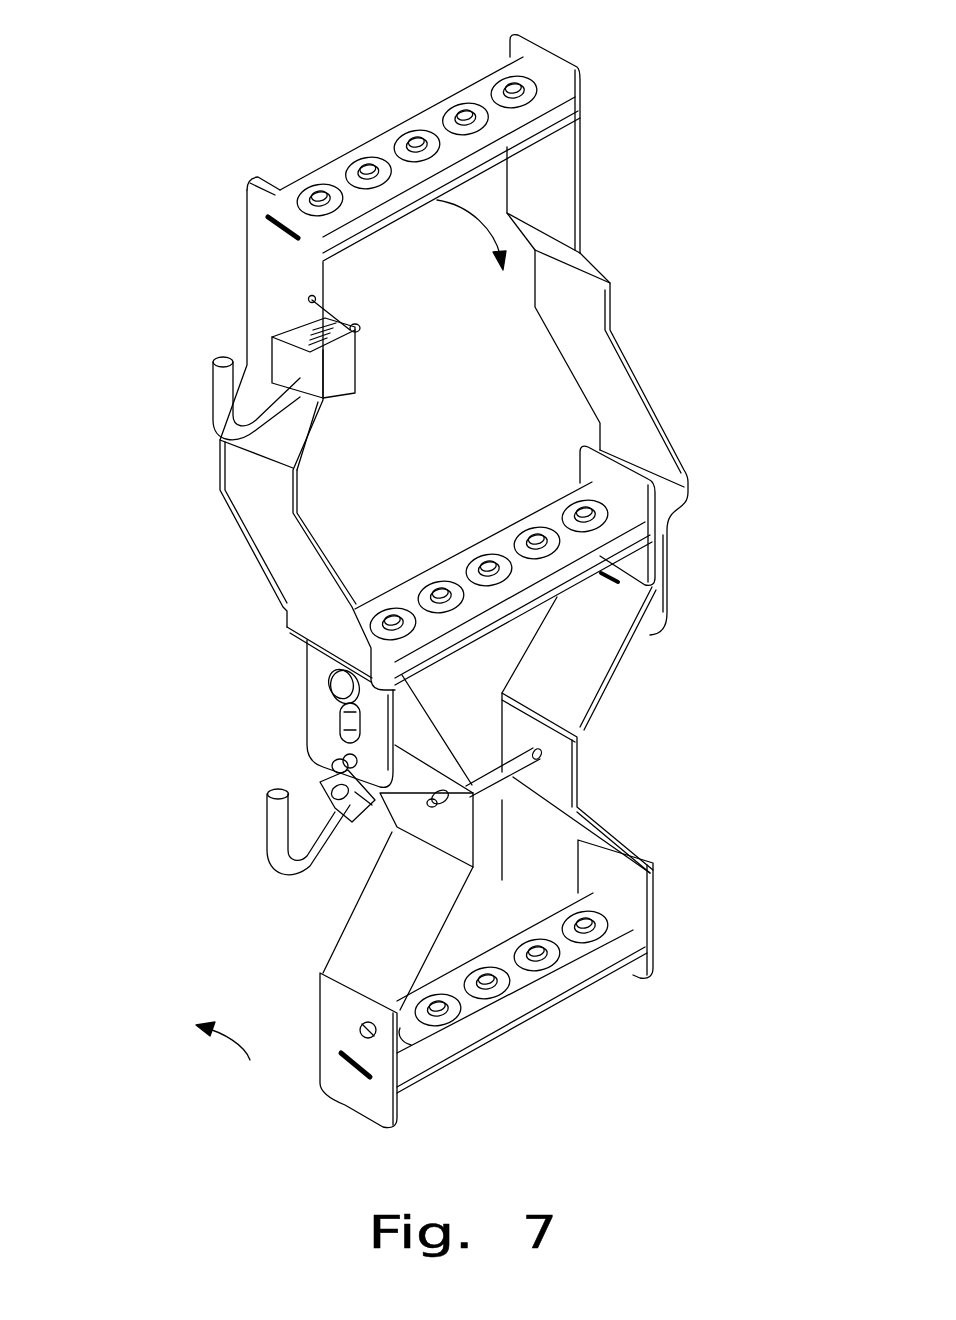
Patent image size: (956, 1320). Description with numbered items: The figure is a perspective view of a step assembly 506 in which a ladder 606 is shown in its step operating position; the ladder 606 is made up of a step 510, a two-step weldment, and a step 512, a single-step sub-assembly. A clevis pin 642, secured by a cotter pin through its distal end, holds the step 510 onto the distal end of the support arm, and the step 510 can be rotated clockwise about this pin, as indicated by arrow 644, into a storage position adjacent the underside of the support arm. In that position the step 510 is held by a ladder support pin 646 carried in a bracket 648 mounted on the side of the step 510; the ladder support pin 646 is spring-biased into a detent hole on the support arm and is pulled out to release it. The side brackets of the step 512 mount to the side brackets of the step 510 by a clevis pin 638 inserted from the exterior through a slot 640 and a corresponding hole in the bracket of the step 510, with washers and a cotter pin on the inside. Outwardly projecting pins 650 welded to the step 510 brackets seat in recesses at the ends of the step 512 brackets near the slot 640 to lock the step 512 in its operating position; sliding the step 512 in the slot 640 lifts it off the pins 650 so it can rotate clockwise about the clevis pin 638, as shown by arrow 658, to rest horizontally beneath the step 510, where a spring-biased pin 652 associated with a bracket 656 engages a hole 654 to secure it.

The step assembly 506 is at (215, 138).
The step 512 is at (582, 126).
The arrow 658 is at (470, 222).
The ladder 606 is at (664, 396).
The pin 652 is at (210, 382).
The bracket 656 is at (347, 370).
The clevis pin 638 is at (340, 690).
The slot 640 is at (342, 720).
The outwardly projecting pin 650 is at (333, 762).
The clevis pin 642 is at (488, 777).
The ladder support pin 646 is at (267, 825).
The bracket 648 is at (350, 824).
The step 510 is at (655, 920).
The hole 654 is at (360, 1033).
The arrow 644 is at (250, 1060).